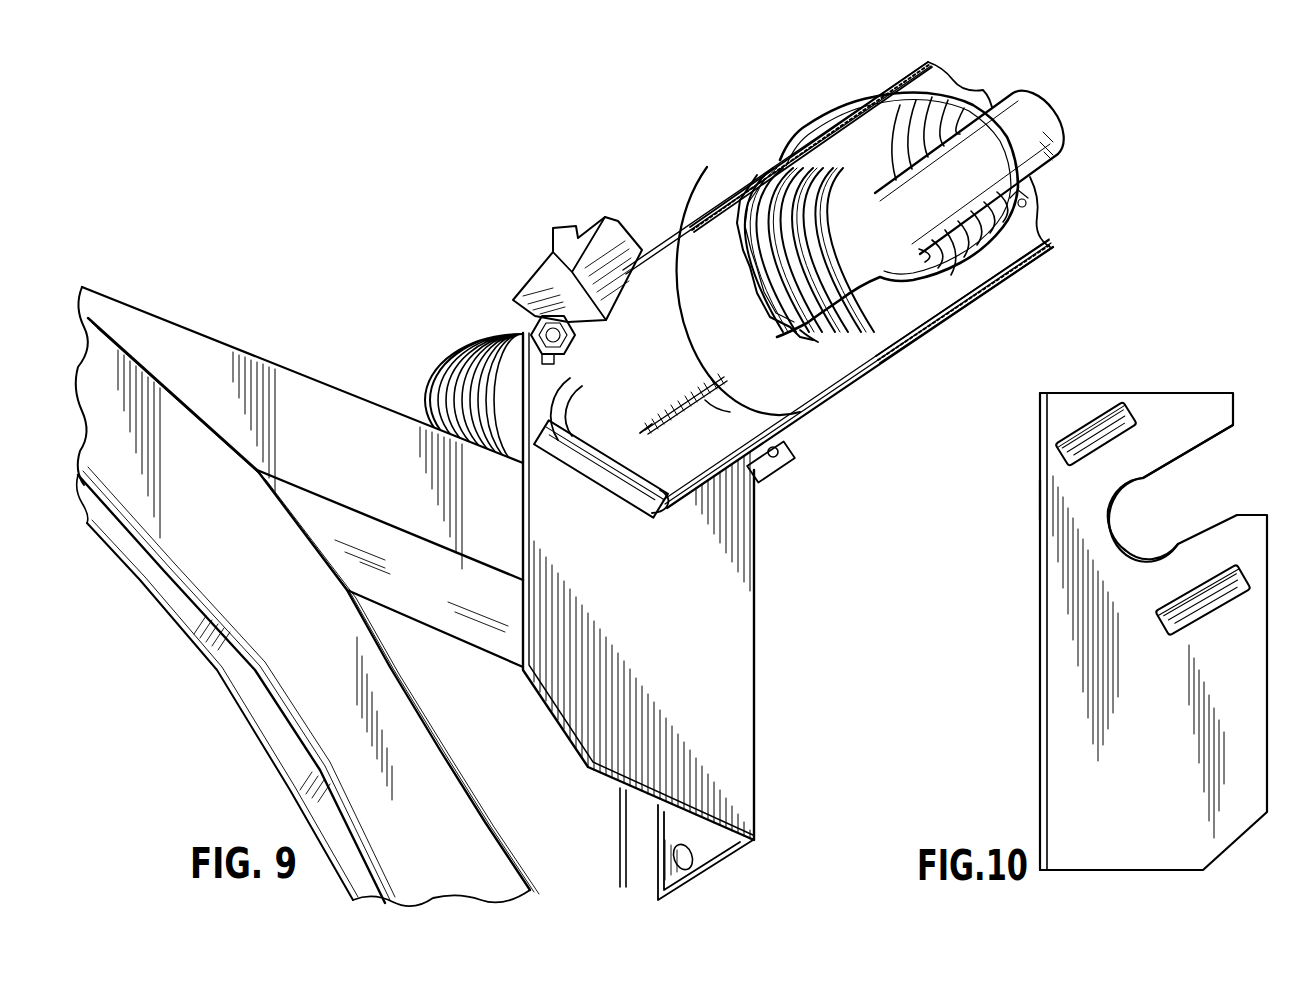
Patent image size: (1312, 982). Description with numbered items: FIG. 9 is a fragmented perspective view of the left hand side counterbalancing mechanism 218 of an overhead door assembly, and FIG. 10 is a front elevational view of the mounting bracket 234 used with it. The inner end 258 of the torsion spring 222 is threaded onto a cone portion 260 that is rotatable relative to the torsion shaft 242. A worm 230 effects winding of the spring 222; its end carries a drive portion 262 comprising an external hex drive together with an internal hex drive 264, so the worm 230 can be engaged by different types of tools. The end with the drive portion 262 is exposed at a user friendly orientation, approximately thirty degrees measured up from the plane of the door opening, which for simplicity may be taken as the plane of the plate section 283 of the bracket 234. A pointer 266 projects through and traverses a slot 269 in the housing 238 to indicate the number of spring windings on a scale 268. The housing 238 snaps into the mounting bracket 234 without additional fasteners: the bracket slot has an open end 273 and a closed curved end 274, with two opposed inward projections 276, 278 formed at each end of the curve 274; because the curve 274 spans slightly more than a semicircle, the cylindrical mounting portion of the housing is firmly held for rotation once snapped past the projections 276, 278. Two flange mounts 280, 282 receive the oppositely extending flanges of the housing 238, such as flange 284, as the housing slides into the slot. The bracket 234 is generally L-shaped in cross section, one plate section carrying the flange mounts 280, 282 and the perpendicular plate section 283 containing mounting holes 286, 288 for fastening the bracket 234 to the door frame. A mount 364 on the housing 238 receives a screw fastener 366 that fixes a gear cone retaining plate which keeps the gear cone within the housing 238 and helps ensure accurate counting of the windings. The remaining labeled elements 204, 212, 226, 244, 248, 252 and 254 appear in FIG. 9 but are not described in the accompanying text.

In FIG. 9, the curved rail 204 is at (445, 740).
In FIG. 9, the beam 212 is at (298, 362).
In FIG. 9, the counterbalancing mechanism 218 is at (934, 214).
In FIG. 9, the torsion spring 222 is at (1045, 262).
In FIG. 9, the clamp block 226 is at (628, 222).
In FIG. 9, the worm 230 is at (522, 326).
In FIG. 9, the mounting bracket 234 is at (765, 650).
In FIG. 10, the mounting bracket 234 is at (1015, 696).
In FIG. 9, the housing 238 is at (698, 190).
In FIG. 9, the torsion shaft 242 is at (1058, 175).
In FIG. 9, the cable drum 244 is at (437, 398).
In FIG. 9, the rod 248 is at (620, 858).
In FIG. 9, the housing wall section 252 is at (930, 342).
In FIG. 9, the housing rail 254 is at (832, 400).
In FIG. 9, the inner end 258 is at (812, 345).
In FIG. 9, the cone portion 260 is at (752, 299).
In FIG. 9, the drive portion 262 is at (598, 318).
In FIG. 9, the internal hex drive 264 is at (566, 377).
In FIG. 9, the pointer 266 is at (677, 416).
In FIG. 9, the scale 268 is at (665, 401).
In FIG. 9, the slot 269 is at (718, 410).
In FIG. 10, the open end 273 is at (1228, 425).
In FIG. 10, the closed curved end 274 is at (1119, 528).
In FIG. 10, the projection 276 is at (1147, 481).
In FIG. 10, the projection 278 is at (1177, 542).
In FIG. 10, the flange mount 280 is at (1100, 432).
In FIG. 9, the flange mount 282 is at (628, 515).
In FIG. 10, the flange mount 282 is at (1200, 605).
In FIG. 9, the plate section 283 is at (714, 865).
In FIG. 9, the flange 284 is at (666, 497).
In FIG. 10, the mounting hole 286 is at (1052, 413).
In FIG. 9, the mounting hole 288 is at (681, 846).
In FIG. 10, the mounting hole 288 is at (1040, 500).
In FIG. 9, the mount 364 is at (778, 470).
In FIG. 9, the screw fastener 366 is at (793, 447).